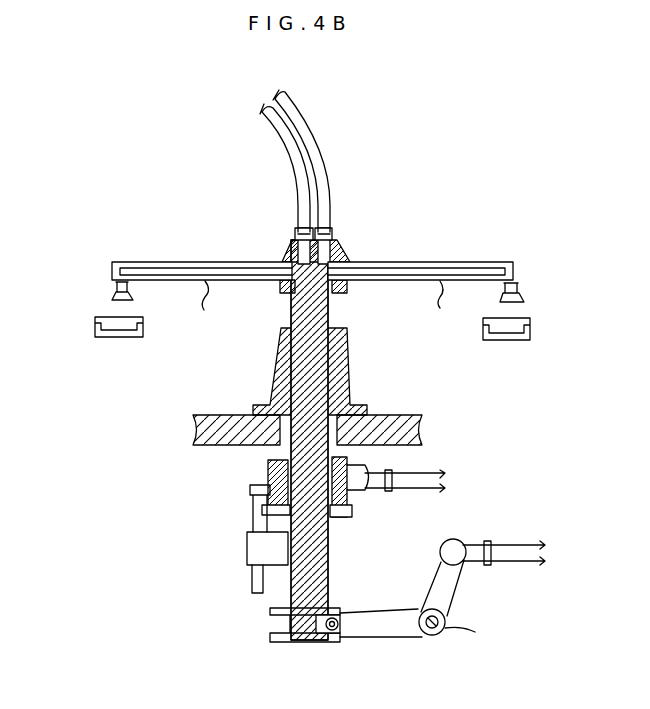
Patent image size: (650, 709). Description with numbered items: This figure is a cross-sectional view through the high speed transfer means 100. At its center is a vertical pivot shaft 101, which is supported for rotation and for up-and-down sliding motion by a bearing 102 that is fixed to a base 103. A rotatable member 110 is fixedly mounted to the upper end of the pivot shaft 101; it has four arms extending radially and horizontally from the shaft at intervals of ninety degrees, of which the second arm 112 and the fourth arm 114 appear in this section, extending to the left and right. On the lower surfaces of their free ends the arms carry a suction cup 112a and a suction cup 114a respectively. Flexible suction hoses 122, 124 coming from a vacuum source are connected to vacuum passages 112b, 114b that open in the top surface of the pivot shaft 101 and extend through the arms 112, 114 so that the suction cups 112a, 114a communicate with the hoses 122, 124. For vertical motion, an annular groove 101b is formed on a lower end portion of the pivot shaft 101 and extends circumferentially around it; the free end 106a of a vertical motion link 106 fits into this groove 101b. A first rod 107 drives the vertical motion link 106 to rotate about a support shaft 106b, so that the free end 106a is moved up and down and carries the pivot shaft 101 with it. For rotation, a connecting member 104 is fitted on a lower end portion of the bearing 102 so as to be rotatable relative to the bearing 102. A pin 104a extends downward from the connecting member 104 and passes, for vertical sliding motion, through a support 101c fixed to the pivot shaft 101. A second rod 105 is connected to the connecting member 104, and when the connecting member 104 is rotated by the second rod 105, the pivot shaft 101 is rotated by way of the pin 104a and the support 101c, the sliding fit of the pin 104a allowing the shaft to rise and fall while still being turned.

The high speed transfer means 100 is at (483, 136).
The pivot shaft 101 is at (333, 320).
The annular groove 101b is at (277, 630).
The support 101c is at (252, 552).
The bearing 102 is at (350, 376).
The base 103 is at (400, 415).
The connecting member 104 is at (352, 497).
The pin 104a is at (262, 506).
The second rod 105 is at (435, 472).
The vertical motion link 106 is at (403, 630).
The free end 106a is at (325, 645).
The support shaft 106b is at (488, 637).
The first rod 107 is at (518, 542).
The rotatable member 110 is at (363, 249).
The second arm 112 is at (206, 262).
The suction cup 112a is at (112, 296).
The vacuum passage 112b is at (214, 308).
The fourth arm 114 is at (460, 264).
The suction cup 114a is at (524, 302).
The vacuum passage 114b is at (442, 305).
The suction hose 122 is at (300, 157).
The suction hose 124 is at (325, 156).